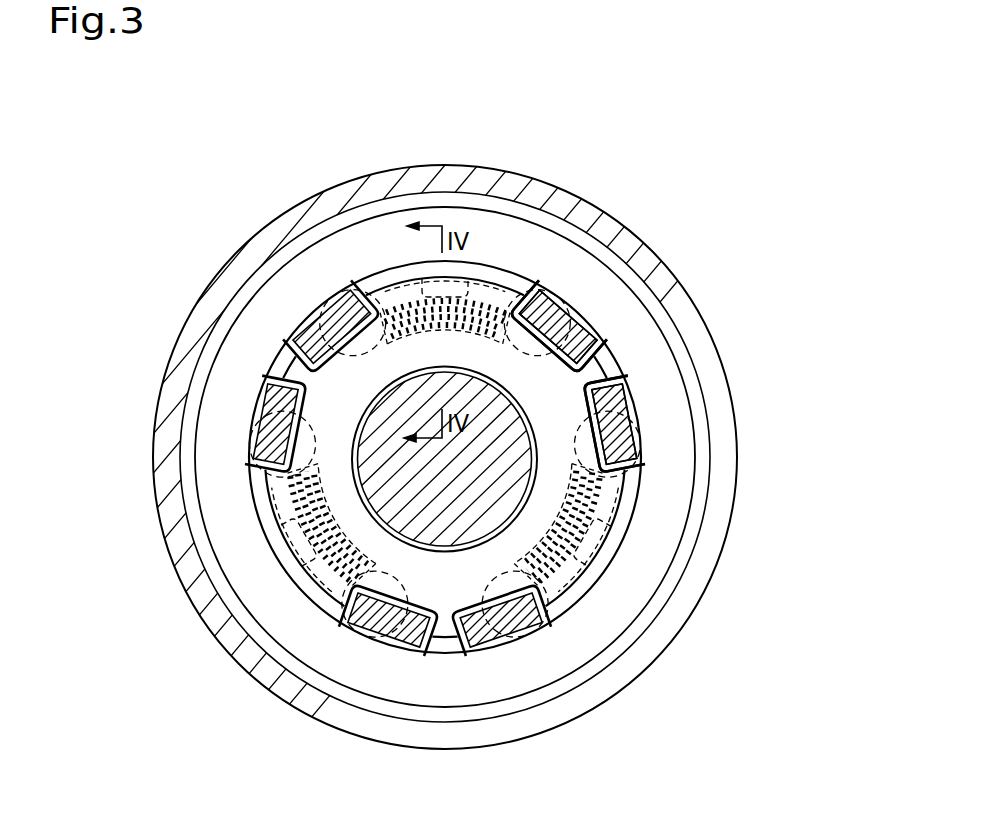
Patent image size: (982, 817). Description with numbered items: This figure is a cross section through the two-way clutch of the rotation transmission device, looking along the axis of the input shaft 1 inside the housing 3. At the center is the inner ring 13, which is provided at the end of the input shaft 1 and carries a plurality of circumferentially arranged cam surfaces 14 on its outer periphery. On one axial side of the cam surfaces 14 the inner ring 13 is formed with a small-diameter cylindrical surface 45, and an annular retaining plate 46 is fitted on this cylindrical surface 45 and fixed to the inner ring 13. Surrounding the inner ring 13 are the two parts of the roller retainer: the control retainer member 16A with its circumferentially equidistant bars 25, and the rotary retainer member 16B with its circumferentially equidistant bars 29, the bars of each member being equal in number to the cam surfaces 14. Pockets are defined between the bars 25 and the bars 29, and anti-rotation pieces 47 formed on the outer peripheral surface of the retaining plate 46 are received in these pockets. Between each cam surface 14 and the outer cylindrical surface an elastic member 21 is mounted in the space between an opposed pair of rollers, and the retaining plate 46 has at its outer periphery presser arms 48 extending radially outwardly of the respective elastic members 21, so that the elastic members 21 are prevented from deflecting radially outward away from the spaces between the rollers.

The input shaft 1 is at (370, 465).
The housing 3 is at (168, 403).
The inner ring 13 is at (600, 365).
The cam surfaces 14 is at (565, 258).
The control retainer member 16A is at (623, 414).
The rotary retainer member 16B is at (577, 314).
The elastic member 21 is at (493, 290).
The bars 25 is at (330, 297).
The bars 29 is at (578, 345).
The small-diameter cylindrical surface 45 is at (410, 366).
The annular retaining plate 46 is at (322, 288).
The anti-rotation pieces 47 is at (537, 300).
The presser arms 48 is at (427, 282).